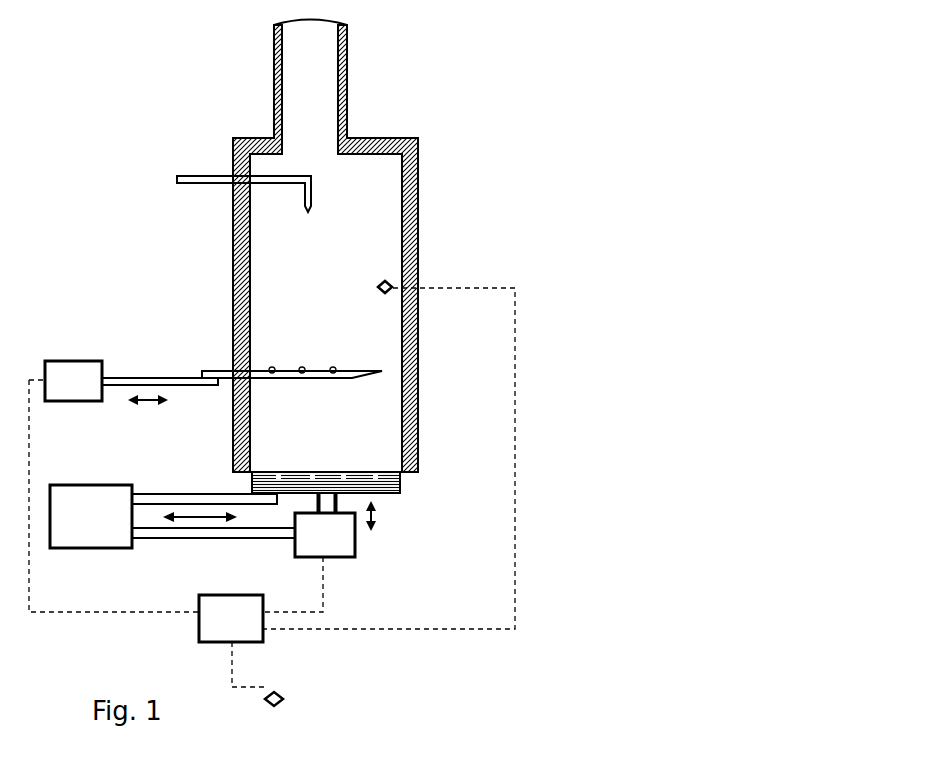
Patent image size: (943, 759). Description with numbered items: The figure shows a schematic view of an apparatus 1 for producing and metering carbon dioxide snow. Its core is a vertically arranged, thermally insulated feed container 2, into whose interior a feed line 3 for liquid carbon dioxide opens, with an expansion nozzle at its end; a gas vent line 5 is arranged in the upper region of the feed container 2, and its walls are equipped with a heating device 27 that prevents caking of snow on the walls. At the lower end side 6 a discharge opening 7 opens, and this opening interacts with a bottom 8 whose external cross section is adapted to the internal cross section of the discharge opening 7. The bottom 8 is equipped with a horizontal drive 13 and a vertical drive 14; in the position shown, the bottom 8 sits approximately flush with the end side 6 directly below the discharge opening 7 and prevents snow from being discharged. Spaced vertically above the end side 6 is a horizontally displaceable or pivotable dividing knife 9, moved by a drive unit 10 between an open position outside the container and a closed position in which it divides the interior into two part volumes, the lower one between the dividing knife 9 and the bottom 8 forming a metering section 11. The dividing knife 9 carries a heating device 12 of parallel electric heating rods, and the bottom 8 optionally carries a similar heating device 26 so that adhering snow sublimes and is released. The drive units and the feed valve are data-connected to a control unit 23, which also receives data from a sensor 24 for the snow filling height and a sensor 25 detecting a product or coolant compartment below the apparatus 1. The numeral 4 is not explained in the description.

The apparatus 1 is at (104, 155).
The feed container 2 is at (421, 235).
The feed line 3 is at (198, 183).
The housing wall 4 is at (423, 394).
The gas vent line 5 is at (347, 43).
The lower end side 6 is at (400, 480).
The discharge opening 7 is at (313, 470).
The bottom 8 is at (395, 494).
The dividing knife 9 is at (357, 370).
The drive unit 10 is at (123, 486).
The metering section 11 is at (362, 410).
The heating device 12 is at (301, 367).
The horizontal drive 13 is at (172, 516).
The vertical drive 14 is at (309, 562).
The control unit 23 is at (233, 641).
The sensor 24 is at (380, 282).
The sensor 25 is at (283, 697).
The heating device 26 is at (278, 471).
The heating device 27 is at (235, 432).